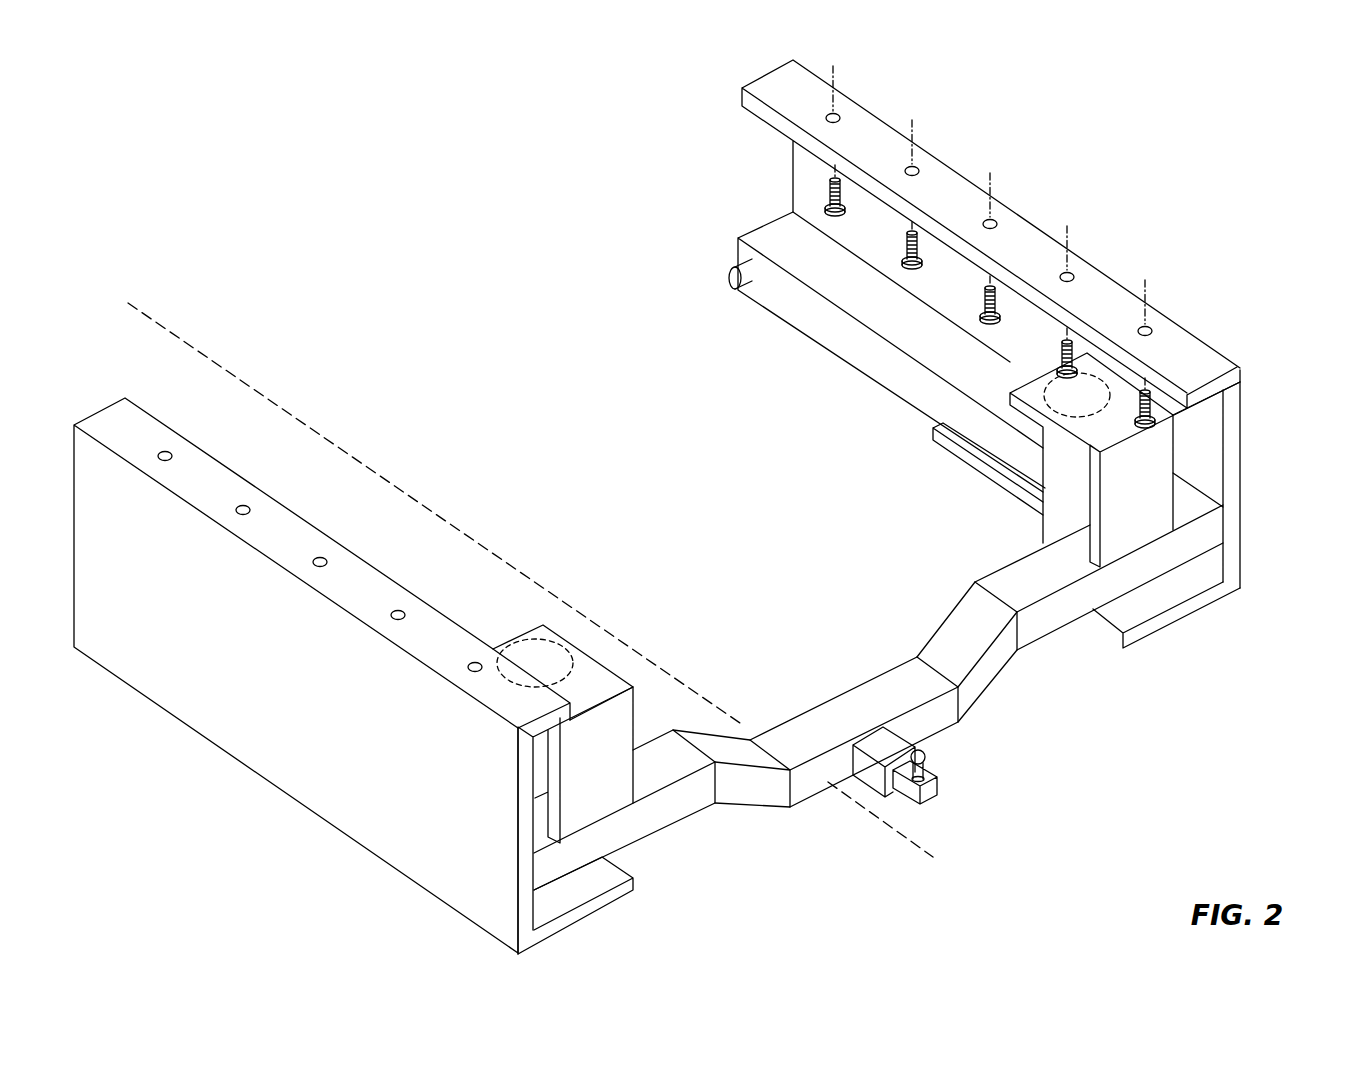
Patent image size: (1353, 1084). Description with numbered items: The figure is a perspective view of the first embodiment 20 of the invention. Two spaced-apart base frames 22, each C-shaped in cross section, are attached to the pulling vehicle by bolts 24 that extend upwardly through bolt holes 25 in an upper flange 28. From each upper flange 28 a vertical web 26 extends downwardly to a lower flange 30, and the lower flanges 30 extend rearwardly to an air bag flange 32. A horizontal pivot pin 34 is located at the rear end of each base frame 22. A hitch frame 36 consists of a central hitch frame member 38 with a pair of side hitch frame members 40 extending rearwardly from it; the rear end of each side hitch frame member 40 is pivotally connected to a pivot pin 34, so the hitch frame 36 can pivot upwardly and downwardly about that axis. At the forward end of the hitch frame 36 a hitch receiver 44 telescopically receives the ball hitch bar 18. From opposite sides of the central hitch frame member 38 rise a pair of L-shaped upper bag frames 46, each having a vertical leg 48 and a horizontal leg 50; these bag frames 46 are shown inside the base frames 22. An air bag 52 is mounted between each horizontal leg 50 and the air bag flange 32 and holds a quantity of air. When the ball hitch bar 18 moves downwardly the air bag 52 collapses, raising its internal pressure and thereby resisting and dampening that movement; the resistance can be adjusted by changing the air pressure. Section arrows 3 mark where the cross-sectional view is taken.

The section line 3- 3 is at (968, 844).
The ball hitch bar 18 is at (926, 757).
The first embodiment 20 is at (878, 530).
The base frame 22 is at (514, 732).
The bolt 24 is at (1150, 390).
The bolt hole 25 is at (1148, 326).
The vertical web 26 is at (1241, 462).
The upper flange 28 is at (1236, 392).
The lower flange 30 is at (1205, 602).
The air bag flange 32 is at (1035, 562).
The horizontal pivot pin 34 is at (743, 288).
The hitch frame 36 is at (991, 680).
The central hitch frame member 38 is at (1020, 625).
The side hitch frame member 40 is at (848, 340).
The hitch receiver 44 is at (866, 790).
The L-shaped upper bag frame 46 is at (635, 687).
The vertical leg 48 is at (1160, 496).
The horizontal leg 50 is at (1116, 415).
The air bag 52 is at (1033, 532).